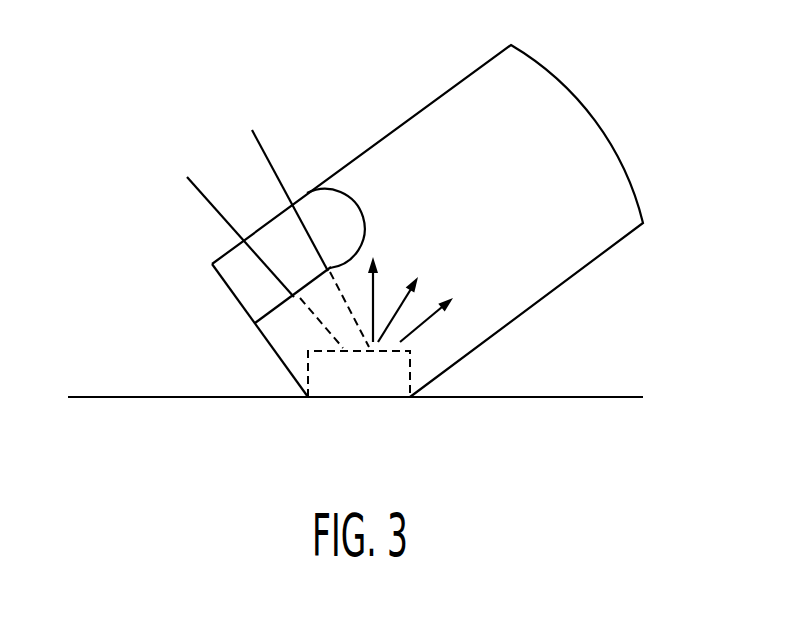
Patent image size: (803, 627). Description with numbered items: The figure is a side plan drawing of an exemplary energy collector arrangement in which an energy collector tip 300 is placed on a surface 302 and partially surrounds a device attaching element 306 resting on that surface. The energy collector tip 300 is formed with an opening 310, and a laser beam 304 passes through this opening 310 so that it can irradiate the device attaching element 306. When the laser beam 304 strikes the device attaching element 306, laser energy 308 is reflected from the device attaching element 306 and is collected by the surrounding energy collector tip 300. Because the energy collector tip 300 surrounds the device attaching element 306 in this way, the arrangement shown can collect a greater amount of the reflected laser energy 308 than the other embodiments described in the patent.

The energy collector tip 300 is at (563, 108).
The surface 302 is at (548, 398).
The laser beam 304 is at (250, 157).
The device attaching element 306 is at (333, 388).
The laser energy 308 is at (372, 262).
The opening 310 is at (247, 295).